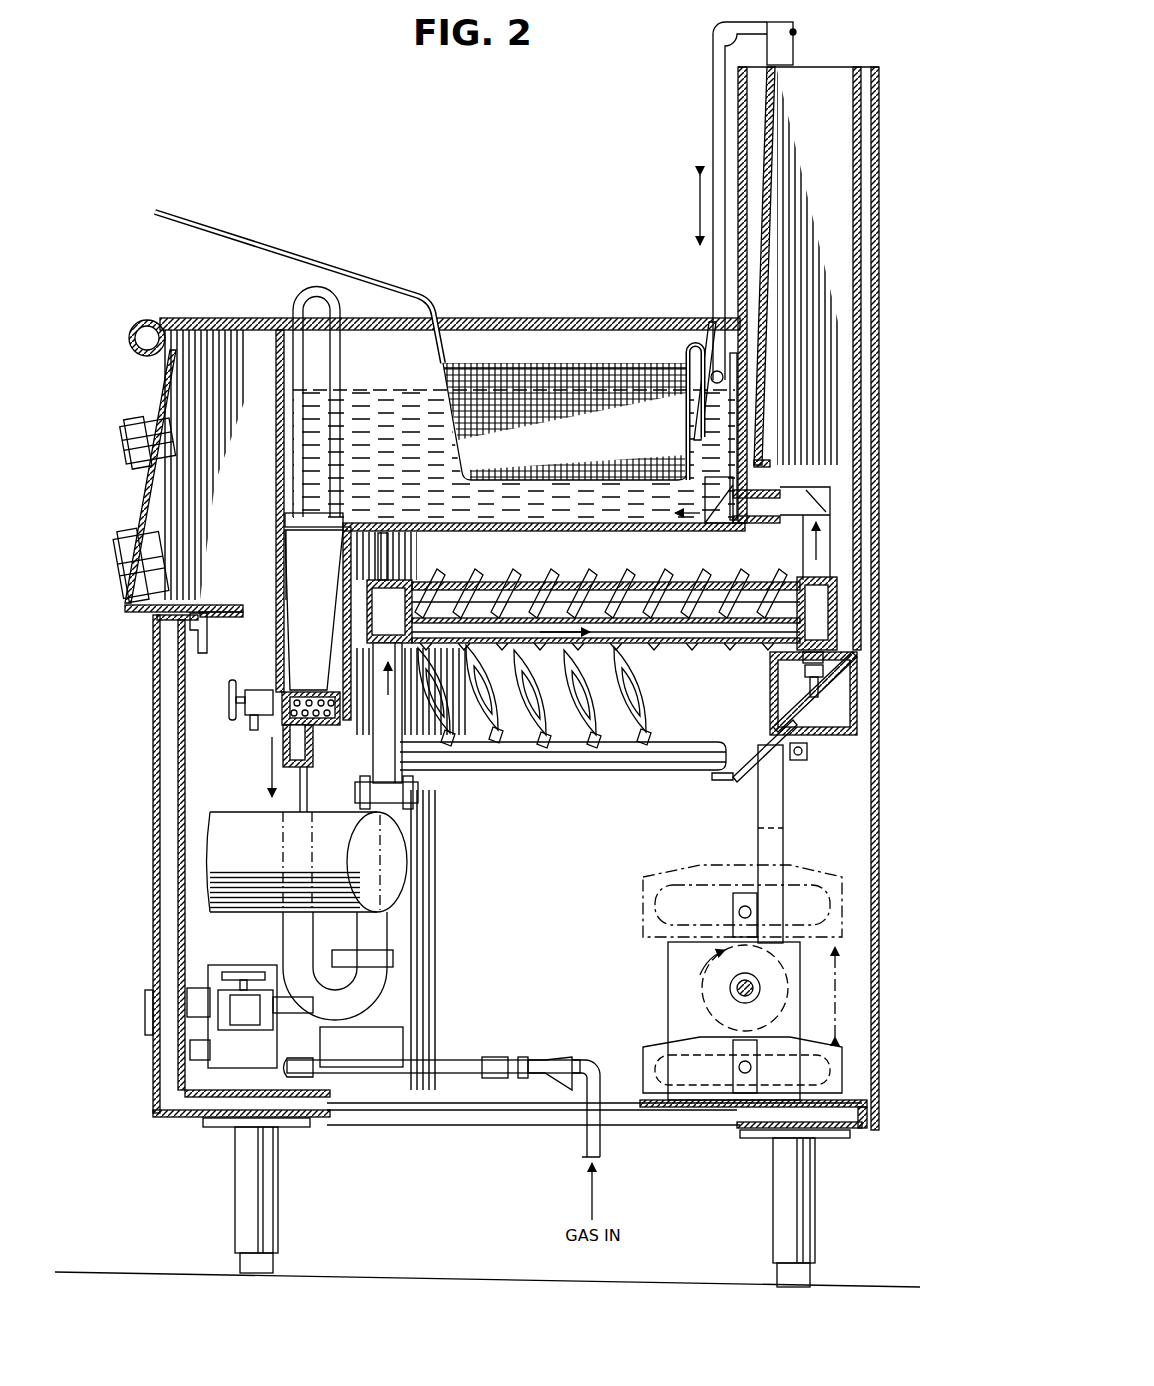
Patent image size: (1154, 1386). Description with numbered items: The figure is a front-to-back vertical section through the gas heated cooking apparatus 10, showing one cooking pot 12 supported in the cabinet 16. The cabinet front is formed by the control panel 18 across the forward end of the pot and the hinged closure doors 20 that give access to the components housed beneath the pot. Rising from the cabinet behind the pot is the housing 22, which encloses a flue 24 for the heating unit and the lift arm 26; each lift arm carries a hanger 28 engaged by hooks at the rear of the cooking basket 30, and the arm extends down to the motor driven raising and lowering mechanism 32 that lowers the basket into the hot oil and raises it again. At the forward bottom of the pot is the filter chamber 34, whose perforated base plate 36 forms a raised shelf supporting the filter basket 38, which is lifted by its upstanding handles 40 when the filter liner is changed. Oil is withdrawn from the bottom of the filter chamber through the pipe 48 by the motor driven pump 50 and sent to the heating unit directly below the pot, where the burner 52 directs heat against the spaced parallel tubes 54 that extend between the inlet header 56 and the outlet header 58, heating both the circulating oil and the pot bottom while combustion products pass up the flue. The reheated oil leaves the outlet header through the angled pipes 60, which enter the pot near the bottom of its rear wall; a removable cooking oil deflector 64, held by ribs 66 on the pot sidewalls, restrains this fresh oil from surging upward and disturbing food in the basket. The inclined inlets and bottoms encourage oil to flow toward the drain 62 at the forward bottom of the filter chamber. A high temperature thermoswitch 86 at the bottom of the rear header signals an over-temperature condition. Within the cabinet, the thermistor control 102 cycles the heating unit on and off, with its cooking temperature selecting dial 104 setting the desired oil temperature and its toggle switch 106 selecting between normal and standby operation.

The cooking apparatus 10 is at (138, 310).
The cooking pot 12 is at (397, 350).
The cabinet 16 is at (250, 318).
The control panel 18 is at (158, 395).
The closure doors 20 is at (153, 780).
The housing 22 is at (880, 230).
The flue 24 is at (830, 90).
The lift arm 26 is at (790, 45).
The hanger 28 is at (712, 128).
The cooking basket 30 is at (605, 365).
The raising and lowering mechanism 32 is at (677, 993).
The filter chamber 34 is at (282, 640).
The base plate 36 is at (305, 690).
The filter basket 38 is at (305, 572).
The handles 40 is at (315, 290).
The pipe 48 is at (298, 750).
The pump 50 is at (385, 863).
The burner 52 is at (575, 765).
The tubes 54 is at (655, 578).
The inlet header 56 is at (392, 600).
The outlet header 58 is at (815, 610).
The angled pipes 60 is at (795, 495).
The drain 62 is at (245, 712).
The cooking oil deflector 64 is at (722, 483).
The ribs 66 is at (707, 505).
The high temperature thermoswitch 86 is at (817, 703).
The thermistor control 102 is at (245, 965).
The cooking temperature selecting dial 104 is at (190, 998).
The toggle switch 106 is at (192, 1048).